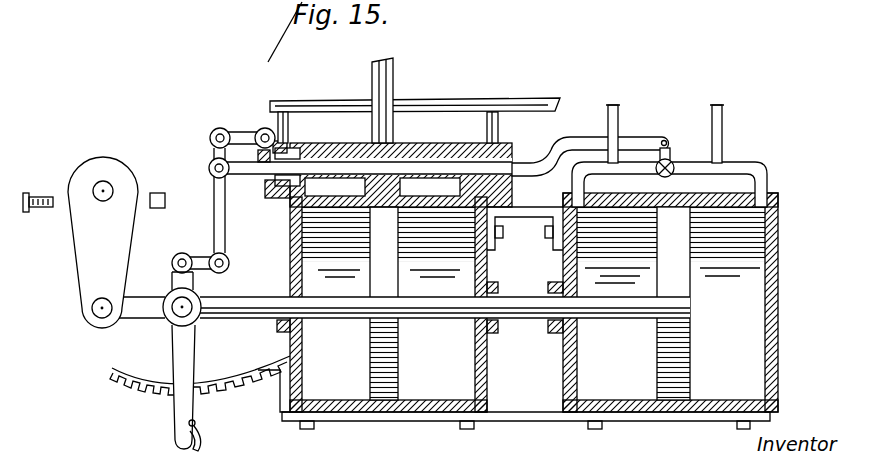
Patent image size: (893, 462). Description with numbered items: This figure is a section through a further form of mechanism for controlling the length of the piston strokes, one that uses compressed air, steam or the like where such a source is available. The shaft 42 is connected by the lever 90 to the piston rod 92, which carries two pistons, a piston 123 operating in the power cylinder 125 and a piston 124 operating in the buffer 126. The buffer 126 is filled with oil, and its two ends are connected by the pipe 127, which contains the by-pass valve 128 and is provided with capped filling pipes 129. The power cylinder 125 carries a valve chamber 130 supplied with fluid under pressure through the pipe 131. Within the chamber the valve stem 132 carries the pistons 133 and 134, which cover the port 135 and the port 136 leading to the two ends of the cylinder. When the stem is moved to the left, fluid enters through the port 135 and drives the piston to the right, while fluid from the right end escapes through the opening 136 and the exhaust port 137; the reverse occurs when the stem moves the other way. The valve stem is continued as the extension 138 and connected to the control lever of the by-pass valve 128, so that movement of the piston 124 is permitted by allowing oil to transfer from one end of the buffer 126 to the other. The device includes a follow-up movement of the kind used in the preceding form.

The shaft 42 is at (104, 181).
The lever 90 is at (84, 248).
The piston rod 92 is at (241, 306).
The piston 123 is at (389, 289).
The piston 124 is at (678, 272).
The power cylinder 125 is at (428, 395).
The buffer 126 is at (752, 341).
The pipe 127 is at (757, 161).
The by-pass valve 128 is at (670, 161).
The filling pipes 129 is at (710, 123).
The valve chamber 130 is at (419, 158).
The pipe 131 is at (372, 76).
The valve stem 132 is at (240, 174).
The piston 133 is at (312, 148).
The piston 134 is at (465, 180).
The port 135 is at (306, 208).
The port 136 is at (474, 217).
The exhaust port 137 is at (500, 130).
The valve stem extension 138 is at (572, 141).